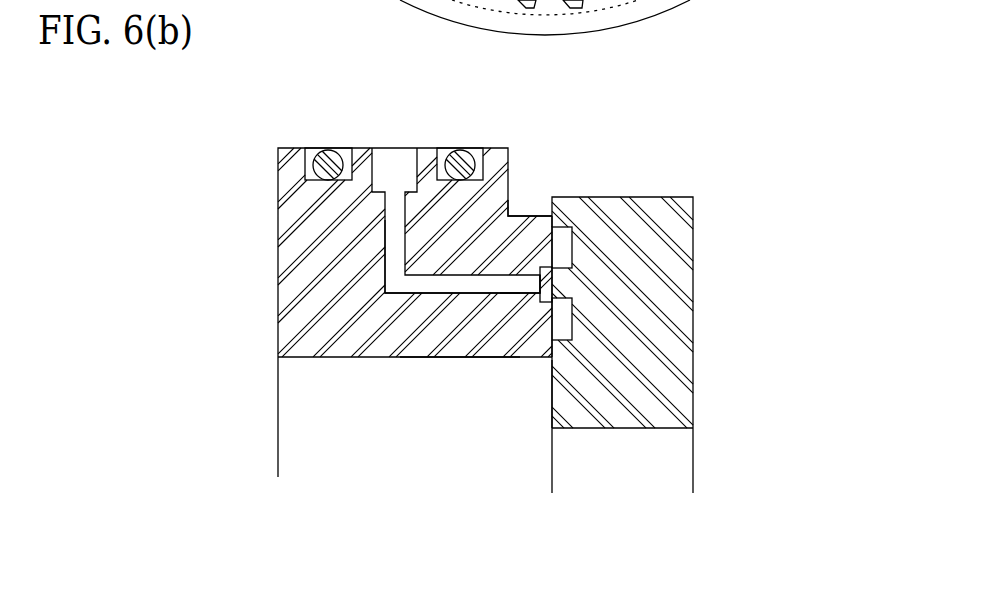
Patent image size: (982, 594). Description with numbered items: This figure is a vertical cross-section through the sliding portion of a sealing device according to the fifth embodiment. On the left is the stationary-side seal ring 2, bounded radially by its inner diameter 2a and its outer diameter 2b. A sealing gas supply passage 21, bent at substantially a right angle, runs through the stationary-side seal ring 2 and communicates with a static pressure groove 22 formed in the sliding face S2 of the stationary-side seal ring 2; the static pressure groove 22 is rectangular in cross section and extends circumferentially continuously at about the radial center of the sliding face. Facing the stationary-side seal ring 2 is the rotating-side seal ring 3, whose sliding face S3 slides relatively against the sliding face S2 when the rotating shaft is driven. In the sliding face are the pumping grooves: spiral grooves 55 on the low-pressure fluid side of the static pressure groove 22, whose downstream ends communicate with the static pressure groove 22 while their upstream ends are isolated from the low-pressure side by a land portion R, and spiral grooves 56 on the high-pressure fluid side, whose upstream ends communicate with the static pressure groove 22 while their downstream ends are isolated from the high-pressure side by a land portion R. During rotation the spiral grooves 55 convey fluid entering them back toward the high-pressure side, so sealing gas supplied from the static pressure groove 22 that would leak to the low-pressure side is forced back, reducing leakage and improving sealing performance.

The stationary-side seal ring 2 is at (497, 148).
The inner diameter 2a is at (463, 358).
The outer diameter 2b is at (527, 214).
The sealing gas supply passage 21 is at (463, 284).
The static pressure groove 22 is at (536, 295).
The rotating-side seal ring 3 is at (693, 270).
The spiral groove 55 is at (563, 323).
The spiral groove 56 is at (573, 243).
The sliding face S2 is at (553, 287).
The sliding face S3 is at (552, 387).
The land portion R is at (562, 222).